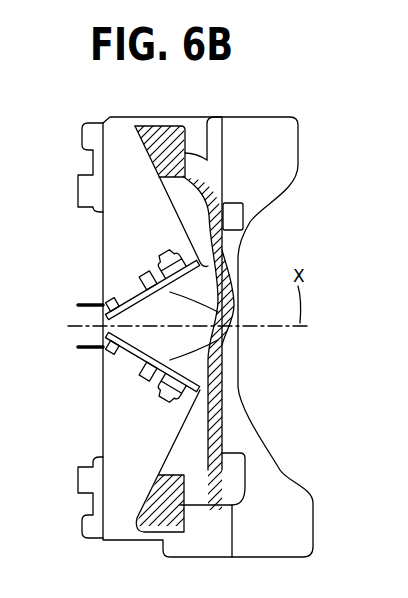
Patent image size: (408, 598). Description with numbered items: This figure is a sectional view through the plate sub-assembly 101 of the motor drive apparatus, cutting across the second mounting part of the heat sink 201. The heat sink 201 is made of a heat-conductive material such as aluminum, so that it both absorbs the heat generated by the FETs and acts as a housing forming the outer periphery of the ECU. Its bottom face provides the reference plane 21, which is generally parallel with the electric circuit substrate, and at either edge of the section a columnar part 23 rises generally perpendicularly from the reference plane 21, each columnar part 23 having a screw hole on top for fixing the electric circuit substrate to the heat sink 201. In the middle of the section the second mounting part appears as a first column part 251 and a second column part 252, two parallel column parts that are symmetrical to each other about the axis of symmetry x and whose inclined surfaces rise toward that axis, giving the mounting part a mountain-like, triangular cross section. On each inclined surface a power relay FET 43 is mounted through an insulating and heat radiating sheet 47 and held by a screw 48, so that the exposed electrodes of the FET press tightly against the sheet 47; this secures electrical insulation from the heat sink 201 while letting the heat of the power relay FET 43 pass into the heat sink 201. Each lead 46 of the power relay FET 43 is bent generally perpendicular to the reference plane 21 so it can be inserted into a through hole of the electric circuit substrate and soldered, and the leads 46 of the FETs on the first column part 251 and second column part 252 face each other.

The plate sub-assembly 101 is at (320, 138).
The reference plane 21 is at (186, 140).
The heat sink 201 is at (210, 130).
The columnar part 23 is at (78, 191).
The power relay FET 43 is at (145, 272).
The lead 46 is at (88, 302).
The insulating and heat radiating sheet 47 is at (107, 290).
The screw 48 is at (157, 250).
The first column part 251 is at (235, 343).
The second column part 252 is at (235, 312).